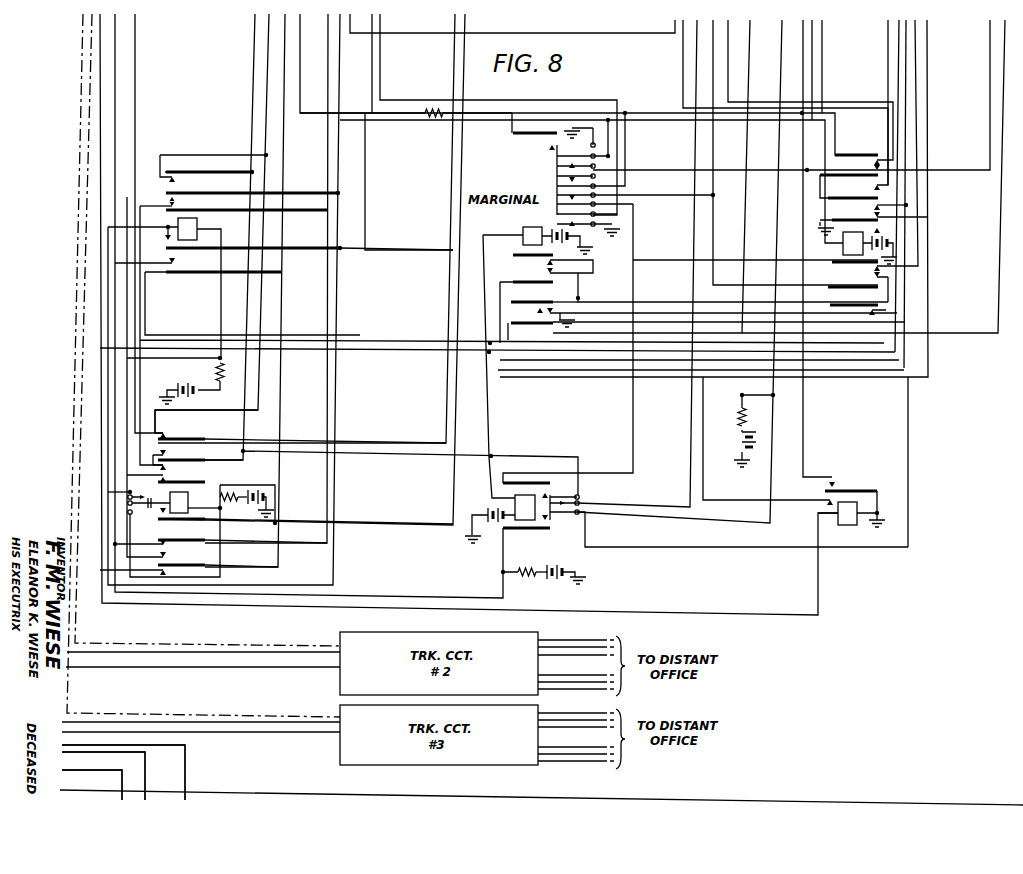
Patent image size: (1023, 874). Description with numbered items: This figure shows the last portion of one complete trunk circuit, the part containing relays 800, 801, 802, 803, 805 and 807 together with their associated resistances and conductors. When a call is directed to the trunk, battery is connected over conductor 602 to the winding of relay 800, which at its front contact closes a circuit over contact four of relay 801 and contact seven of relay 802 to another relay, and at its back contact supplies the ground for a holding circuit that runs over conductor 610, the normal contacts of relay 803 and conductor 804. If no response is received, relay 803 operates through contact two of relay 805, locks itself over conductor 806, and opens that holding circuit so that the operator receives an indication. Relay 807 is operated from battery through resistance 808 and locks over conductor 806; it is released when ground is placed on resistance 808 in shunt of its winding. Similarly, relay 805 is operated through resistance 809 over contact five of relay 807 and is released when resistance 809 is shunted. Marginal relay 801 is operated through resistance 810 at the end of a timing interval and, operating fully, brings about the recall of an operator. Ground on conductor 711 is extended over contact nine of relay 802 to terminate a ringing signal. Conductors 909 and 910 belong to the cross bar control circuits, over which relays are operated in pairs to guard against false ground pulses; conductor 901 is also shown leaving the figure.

The conductor 602 is at (117, 96).
The conductor 711 is at (102, 117).
The conductor 610 is at (908, 460).
The relay 800 is at (850, 500).
The relay 801 is at (523, 232).
The relay 802 is at (853, 257).
The relay 803 is at (527, 521).
The conductor 804 is at (673, 506).
The relay 805 is at (188, 500).
The conductor 806 is at (634, 394).
The relay 807 is at (190, 242).
The resistance 808 is at (215, 369).
The resistance 809 is at (243, 493).
The resistance 810 is at (433, 120).
The conductor 901 is at (112, 775).
The conductor 909 is at (148, 768).
The conductor 910 is at (185, 775).